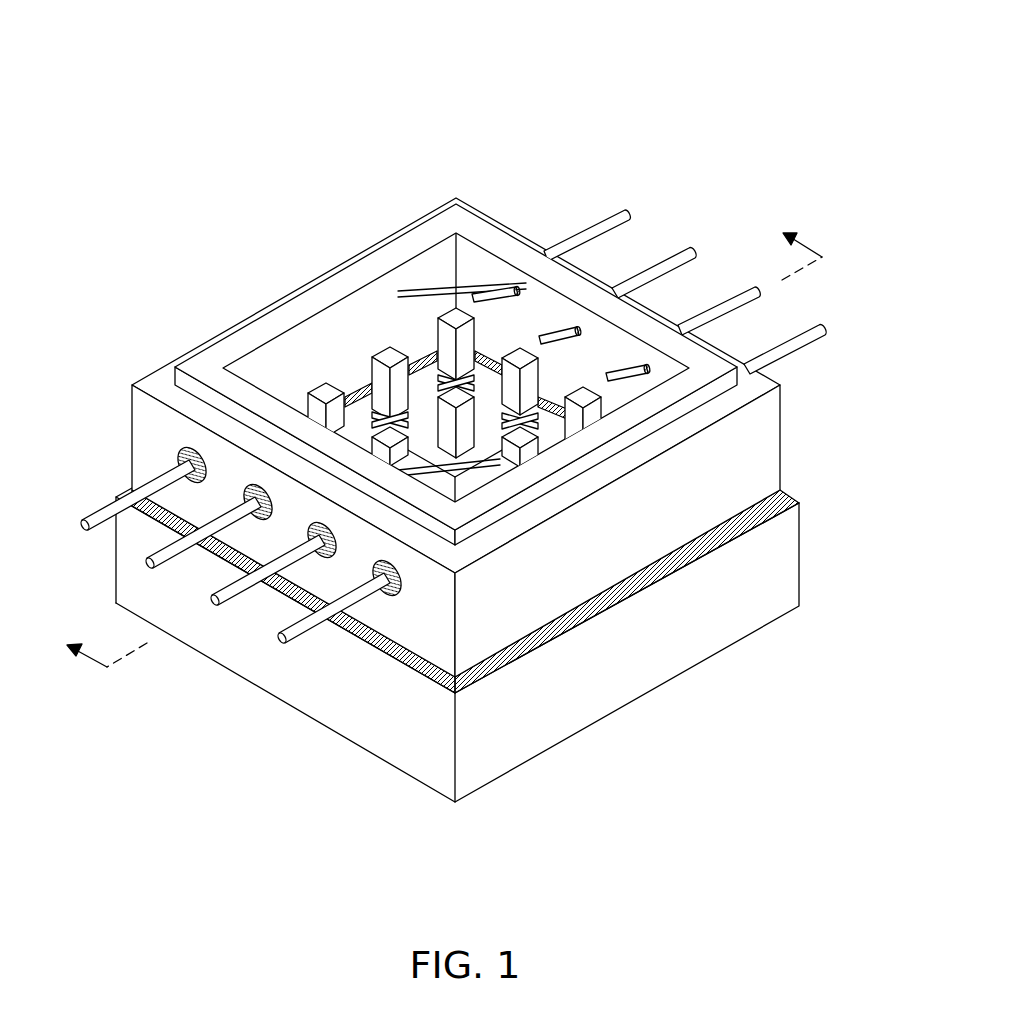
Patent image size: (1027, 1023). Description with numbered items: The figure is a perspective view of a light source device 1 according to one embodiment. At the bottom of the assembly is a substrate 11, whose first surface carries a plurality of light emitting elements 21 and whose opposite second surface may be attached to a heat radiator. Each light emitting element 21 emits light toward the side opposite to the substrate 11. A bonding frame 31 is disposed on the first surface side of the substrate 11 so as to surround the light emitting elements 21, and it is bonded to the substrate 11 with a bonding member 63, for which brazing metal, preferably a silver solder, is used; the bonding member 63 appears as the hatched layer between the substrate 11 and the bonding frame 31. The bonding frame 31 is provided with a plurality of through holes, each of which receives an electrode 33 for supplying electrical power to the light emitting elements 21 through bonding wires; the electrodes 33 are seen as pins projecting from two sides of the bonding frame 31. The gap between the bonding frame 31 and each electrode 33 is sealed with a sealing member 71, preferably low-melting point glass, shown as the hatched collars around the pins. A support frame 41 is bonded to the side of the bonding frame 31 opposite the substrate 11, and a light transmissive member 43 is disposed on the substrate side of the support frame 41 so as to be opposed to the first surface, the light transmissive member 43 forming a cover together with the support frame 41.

The light source device 1 is at (812, 76).
The substrate 11 is at (788, 570).
The light emitting element 21 is at (388, 345).
The bonding frame 31 is at (776, 455).
The electrode 33 is at (628, 207).
The support frame 41 is at (742, 388).
The light transmissive member 43 is at (468, 278).
The bonding member 63 is at (796, 506).
The sealing member 71 is at (246, 484).